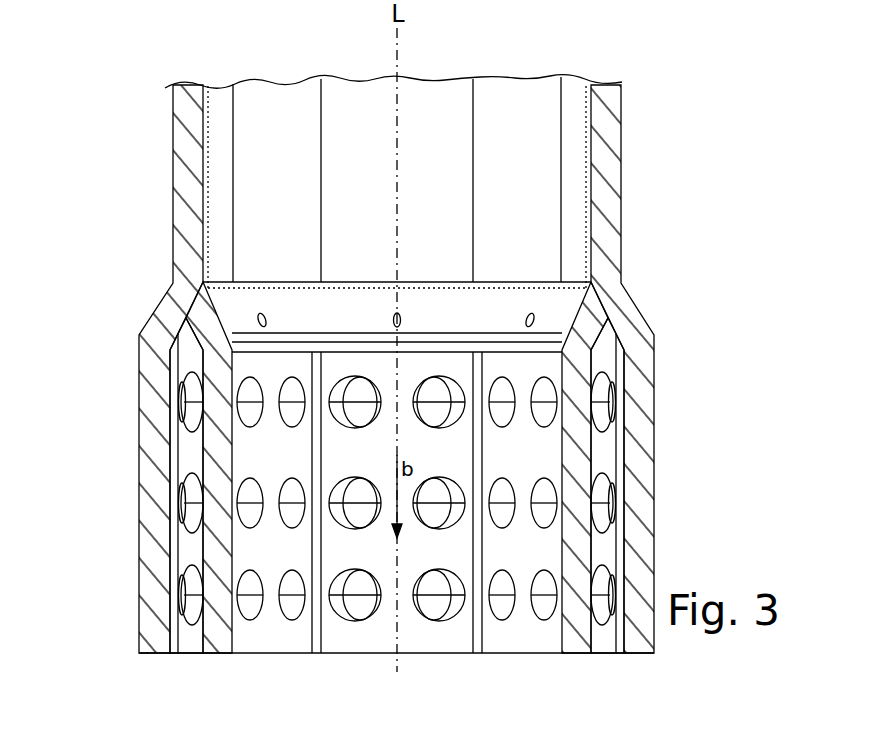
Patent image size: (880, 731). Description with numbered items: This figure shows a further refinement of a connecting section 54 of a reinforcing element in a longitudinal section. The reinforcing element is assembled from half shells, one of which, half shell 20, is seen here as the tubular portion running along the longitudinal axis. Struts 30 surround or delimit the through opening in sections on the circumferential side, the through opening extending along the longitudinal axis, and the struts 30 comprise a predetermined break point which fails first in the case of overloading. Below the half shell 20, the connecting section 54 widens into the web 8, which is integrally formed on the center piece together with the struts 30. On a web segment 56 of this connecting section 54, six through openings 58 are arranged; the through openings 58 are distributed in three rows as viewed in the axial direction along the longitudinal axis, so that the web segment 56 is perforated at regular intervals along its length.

The web 8 is at (648, 384).
The half shell 20 is at (635, 155).
The struts 30 is at (180, 88).
The connecting section 54 is at (672, 230).
The web segment 56 is at (535, 462).
The through openings 58 is at (192, 383).